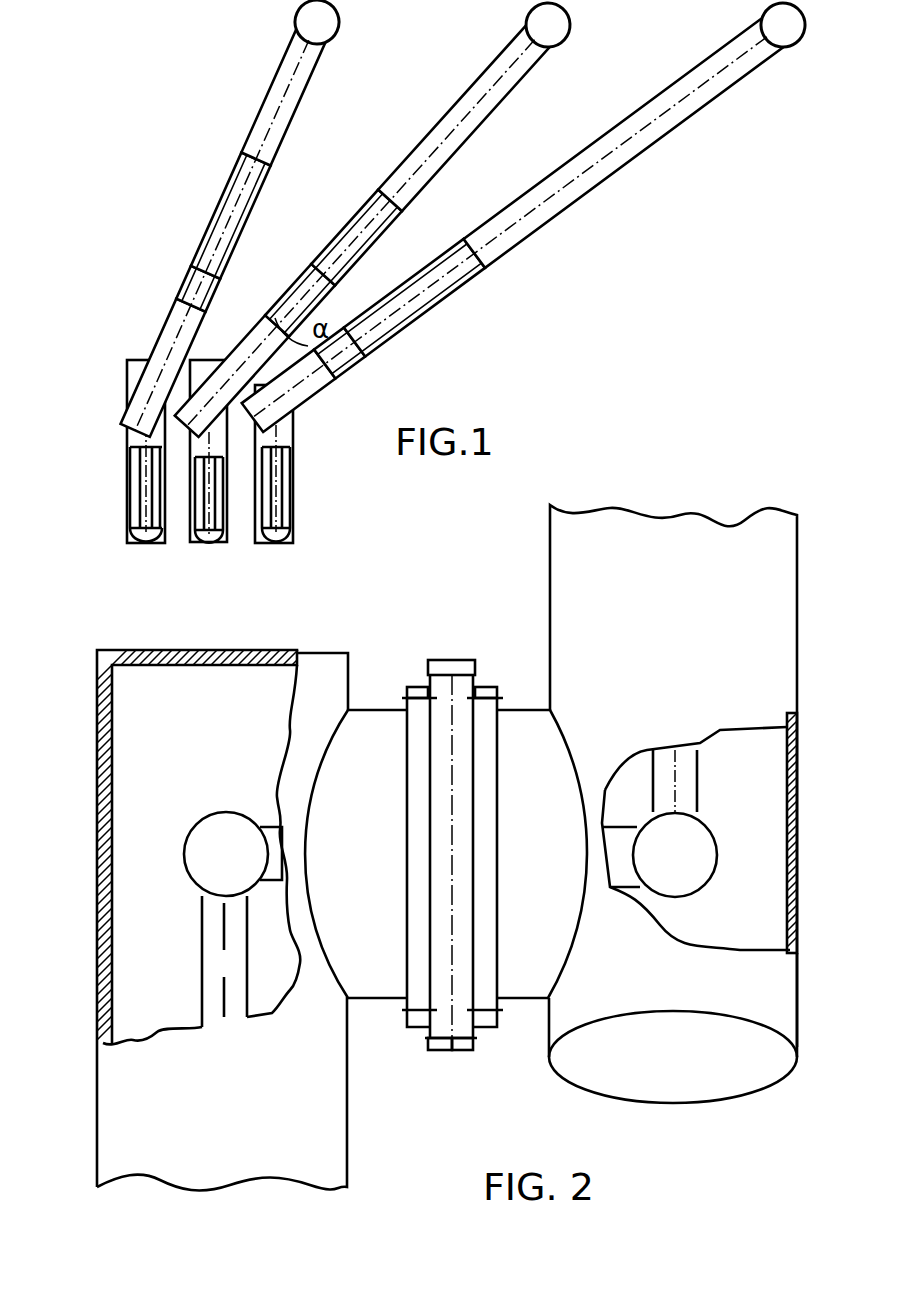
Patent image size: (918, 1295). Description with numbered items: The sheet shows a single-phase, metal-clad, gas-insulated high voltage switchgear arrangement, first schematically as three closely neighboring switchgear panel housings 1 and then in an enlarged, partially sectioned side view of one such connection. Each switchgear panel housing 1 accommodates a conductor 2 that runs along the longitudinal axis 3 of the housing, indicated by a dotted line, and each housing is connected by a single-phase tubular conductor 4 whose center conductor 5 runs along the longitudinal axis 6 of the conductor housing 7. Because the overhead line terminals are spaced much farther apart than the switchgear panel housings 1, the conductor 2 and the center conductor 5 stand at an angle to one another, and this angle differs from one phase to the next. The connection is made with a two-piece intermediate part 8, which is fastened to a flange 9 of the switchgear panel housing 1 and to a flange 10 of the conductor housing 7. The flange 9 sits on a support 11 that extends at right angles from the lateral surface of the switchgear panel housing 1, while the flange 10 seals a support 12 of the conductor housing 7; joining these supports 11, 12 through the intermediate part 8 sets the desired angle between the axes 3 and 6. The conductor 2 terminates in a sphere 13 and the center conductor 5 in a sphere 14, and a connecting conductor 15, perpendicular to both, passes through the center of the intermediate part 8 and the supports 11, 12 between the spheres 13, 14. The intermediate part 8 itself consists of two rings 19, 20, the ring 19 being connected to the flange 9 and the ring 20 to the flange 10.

In FIG. 1, the switchgear panel housing 1 is at (130, 540).
In FIG. 2, the switchgear panel housing 1 is at (97, 722).
In FIG. 1, the conductor 2 is at (130, 478).
In FIG. 2, the conductor 2 is at (202, 992).
In FIG. 1, the longitudinal axis 3 is at (133, 506).
In FIG. 2, the longitudinal axis 3 is at (202, 920).
In FIG. 1, the tubular conductor 4 is at (262, 112).
In FIG. 2, the tubular conductor 4 is at (785, 640).
In FIG. 1, the center conductor 5 is at (222, 208).
In FIG. 2, the center conductor 5 is at (700, 803).
In FIG. 1, the longitudinal axis 6 is at (222, 268).
In FIG. 2, the longitudinal axis 6 is at (797, 757).
In FIG. 1, the conductor housing 7 is at (172, 288).
In FIG. 2, the conductor housing 7 is at (802, 923).
In FIG. 2, the intermediate part 8 is at (447, 660).
In FIG. 2, the flange 9 is at (410, 688).
In FIG. 2, the flange 10 is at (492, 688).
In FIG. 2, the support 11 is at (367, 985).
In FIG. 2, the support 12 is at (532, 987).
In FIG. 2, the sphere 13 is at (210, 850).
In FIG. 2, the sphere 14 is at (687, 883).
In FIG. 2, the connecting conductor 15 is at (270, 833).
In FIG. 2, the ring 19 is at (440, 1052).
In FIG. 2, the ring 20 is at (463, 1052).